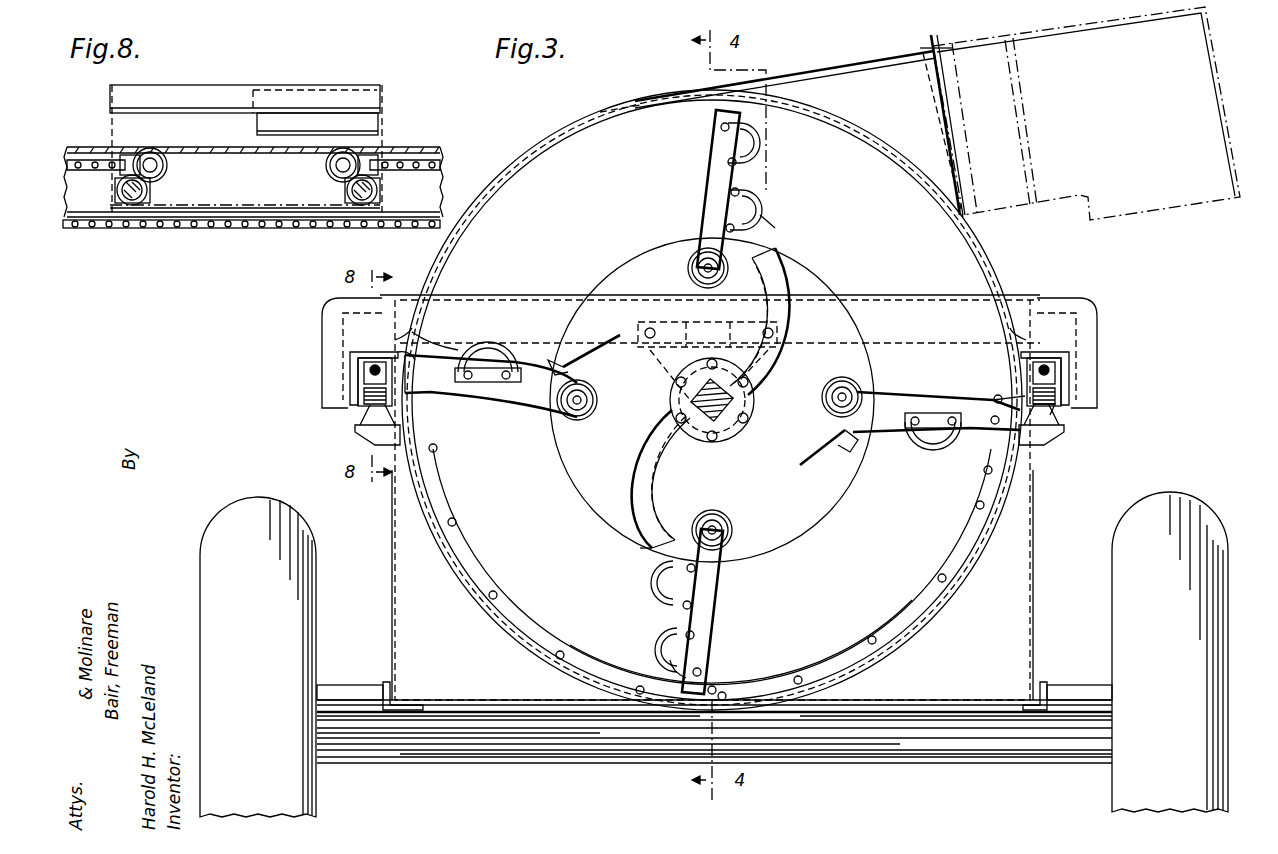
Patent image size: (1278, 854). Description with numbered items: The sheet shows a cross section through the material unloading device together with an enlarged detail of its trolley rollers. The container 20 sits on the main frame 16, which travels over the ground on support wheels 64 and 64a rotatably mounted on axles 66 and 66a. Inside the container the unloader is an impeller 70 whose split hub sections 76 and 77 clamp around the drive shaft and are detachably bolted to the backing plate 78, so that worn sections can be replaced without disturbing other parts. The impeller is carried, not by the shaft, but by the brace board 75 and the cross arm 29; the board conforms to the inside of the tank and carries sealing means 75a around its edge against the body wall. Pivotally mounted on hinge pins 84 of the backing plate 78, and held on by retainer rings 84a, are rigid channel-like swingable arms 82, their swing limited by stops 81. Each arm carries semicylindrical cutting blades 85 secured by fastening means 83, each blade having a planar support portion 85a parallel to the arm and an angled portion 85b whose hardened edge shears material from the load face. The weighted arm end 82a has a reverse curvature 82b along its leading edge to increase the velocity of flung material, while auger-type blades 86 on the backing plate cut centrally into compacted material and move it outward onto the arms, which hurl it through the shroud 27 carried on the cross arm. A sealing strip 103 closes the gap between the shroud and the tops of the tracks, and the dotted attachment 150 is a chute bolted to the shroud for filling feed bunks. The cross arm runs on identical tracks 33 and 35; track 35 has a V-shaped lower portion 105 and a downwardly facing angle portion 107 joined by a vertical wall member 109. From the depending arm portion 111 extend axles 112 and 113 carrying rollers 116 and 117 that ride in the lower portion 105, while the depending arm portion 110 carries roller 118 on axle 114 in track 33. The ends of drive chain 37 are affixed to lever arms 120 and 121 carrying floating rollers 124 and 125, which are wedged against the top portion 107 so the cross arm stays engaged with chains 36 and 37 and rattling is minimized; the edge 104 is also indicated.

In FIG. 3, the main frame 16 is at (1043, 656).
In FIG. 3, the container 20 is at (455, 566).
In FIG. 3, the shroud 27 is at (855, 78).
In FIG. 8, the cross arm 29 is at (384, 106).
In FIG. 3, the cross arm 29 is at (514, 296).
In FIG. 3, the track 33 is at (1022, 360).
In FIG. 8, the track 35 is at (207, 219).
In FIG. 3, the track 35 is at (468, 350).
In FIG. 3, the drive chain 36 is at (1062, 436).
In FIG. 8, the drive chain 37 is at (436, 160).
In FIG. 3, the drive chain 37 is at (360, 436).
In FIG. 3, the support wheel 64 is at (1112, 570).
In FIG. 3, the wheel 64a is at (308, 562).
In FIG. 3, the axle 66 is at (1060, 688).
In FIG. 3, the axle bracket 66a is at (360, 684).
In FIG. 3, the impeller 70 is at (636, 545).
In FIG. 3, the brace board 75 is at (492, 500).
In FIG. 3, the sealing means 75a is at (900, 652).
In FIG. 3, the hub section 76 is at (742, 430).
In FIG. 3, the hub section 77 is at (698, 398).
In FIG. 3, the backing plate 78 is at (815, 515).
In FIG. 3, the stop 81 is at (610, 342).
In FIG. 3, the swingable arm 82 is at (716, 178).
In FIG. 3, the arm end 82a is at (716, 690).
In FIG. 3, the reverse curvature 82b is at (668, 670).
In FIG. 3, the fastening means 83 is at (506, 386).
In FIG. 3, the hinge pin 84 is at (692, 268).
In FIG. 3, the retainer ring 84a is at (698, 253).
In FIG. 3, the cutting blade 85 is at (747, 143).
In FIG. 3, the support portion 85a is at (727, 207).
In FIG. 3, the angled portion 85b is at (762, 225).
In FIG. 3, the auger-type blade 86 is at (766, 316).
In FIG. 3, the sealing strip 103 is at (414, 332).
In FIG. 3, the arm edge 104 is at (990, 438).
In FIG. 8, the V-shaped portion 105 is at (248, 221).
In FIG. 3, the V-shaped portion 105 is at (418, 424).
In FIG. 8, the angle portion 107 is at (212, 150).
In FIG. 3, the angle portion 107 is at (384, 356).
In FIG. 3, the wall member 109 is at (430, 400).
In FIG. 3, the depending arm portion 110 is at (1092, 322).
In FIG. 3, the depending arm portion 111 is at (325, 326).
In FIG. 8, the axle 112 is at (133, 197).
In FIG. 3, the axle 112 is at (360, 402).
In FIG. 8, the axle 113 is at (352, 200).
In FIG. 3, the axle 114 is at (1060, 385).
In FIG. 8, the roller 116 is at (125, 201).
In FIG. 8, the roller 117 is at (333, 205).
In FIG. 3, the roller 118 is at (1060, 410).
In FIG. 8, the lever arm 120 is at (138, 152).
In FIG. 8, the lever arm 121 is at (384, 150).
In FIG. 8, the floating roller 124 is at (165, 156).
In FIG. 8, the floating roller 125 is at (328, 165).
In FIG. 3, the attachment 150 is at (1157, 217).